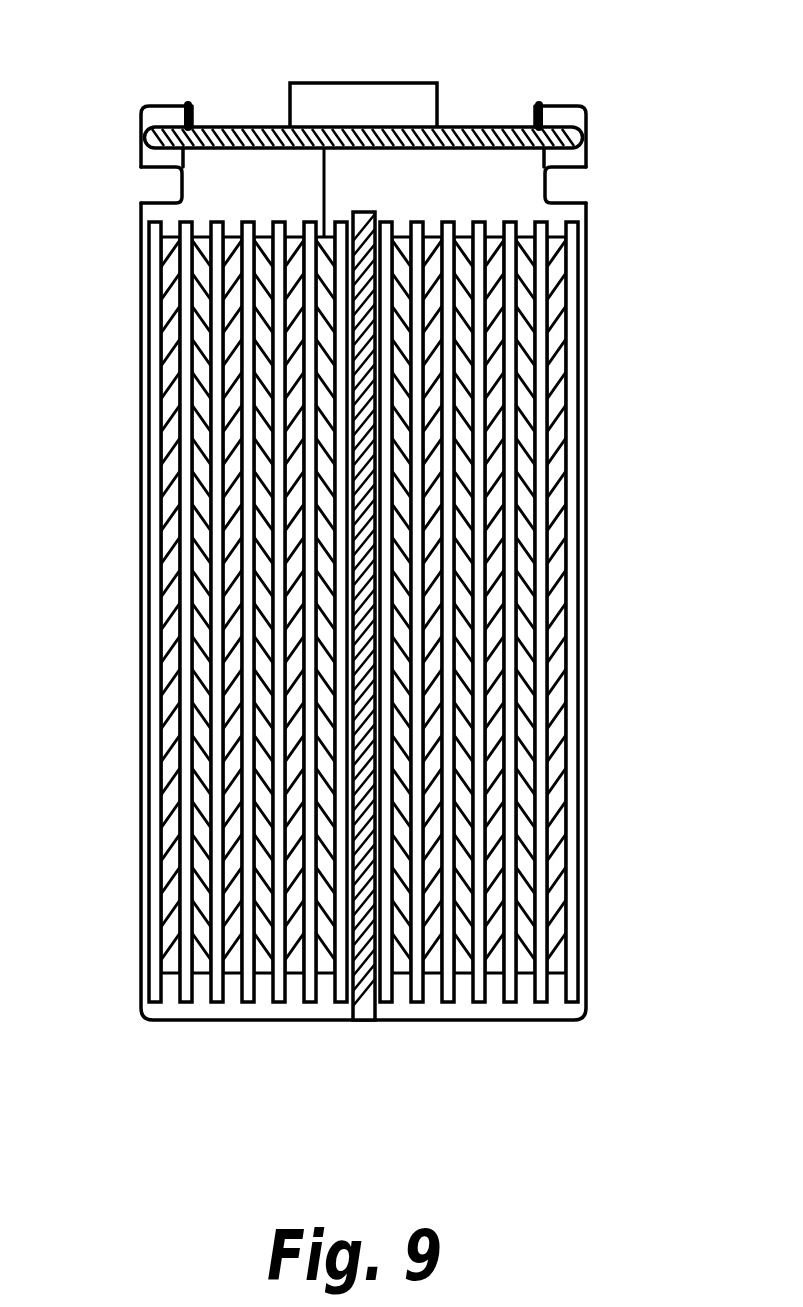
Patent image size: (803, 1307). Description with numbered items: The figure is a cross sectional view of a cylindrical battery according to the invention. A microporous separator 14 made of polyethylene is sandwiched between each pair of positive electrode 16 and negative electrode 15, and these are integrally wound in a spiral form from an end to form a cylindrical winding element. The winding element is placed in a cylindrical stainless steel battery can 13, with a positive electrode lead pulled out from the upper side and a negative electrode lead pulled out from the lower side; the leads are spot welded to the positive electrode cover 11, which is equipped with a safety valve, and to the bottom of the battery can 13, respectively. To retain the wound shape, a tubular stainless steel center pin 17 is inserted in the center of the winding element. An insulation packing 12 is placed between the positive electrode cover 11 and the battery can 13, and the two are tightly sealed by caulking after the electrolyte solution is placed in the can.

The positive electrode cover 11 is at (377, 82).
The insulation packing 12 is at (585, 137).
The battery can 13 is at (592, 207).
The microporous separator 14 is at (564, 978).
The negative electrode 15 is at (167, 313).
The positive electrode 16 is at (200, 383).
The center pin 17 is at (361, 980).